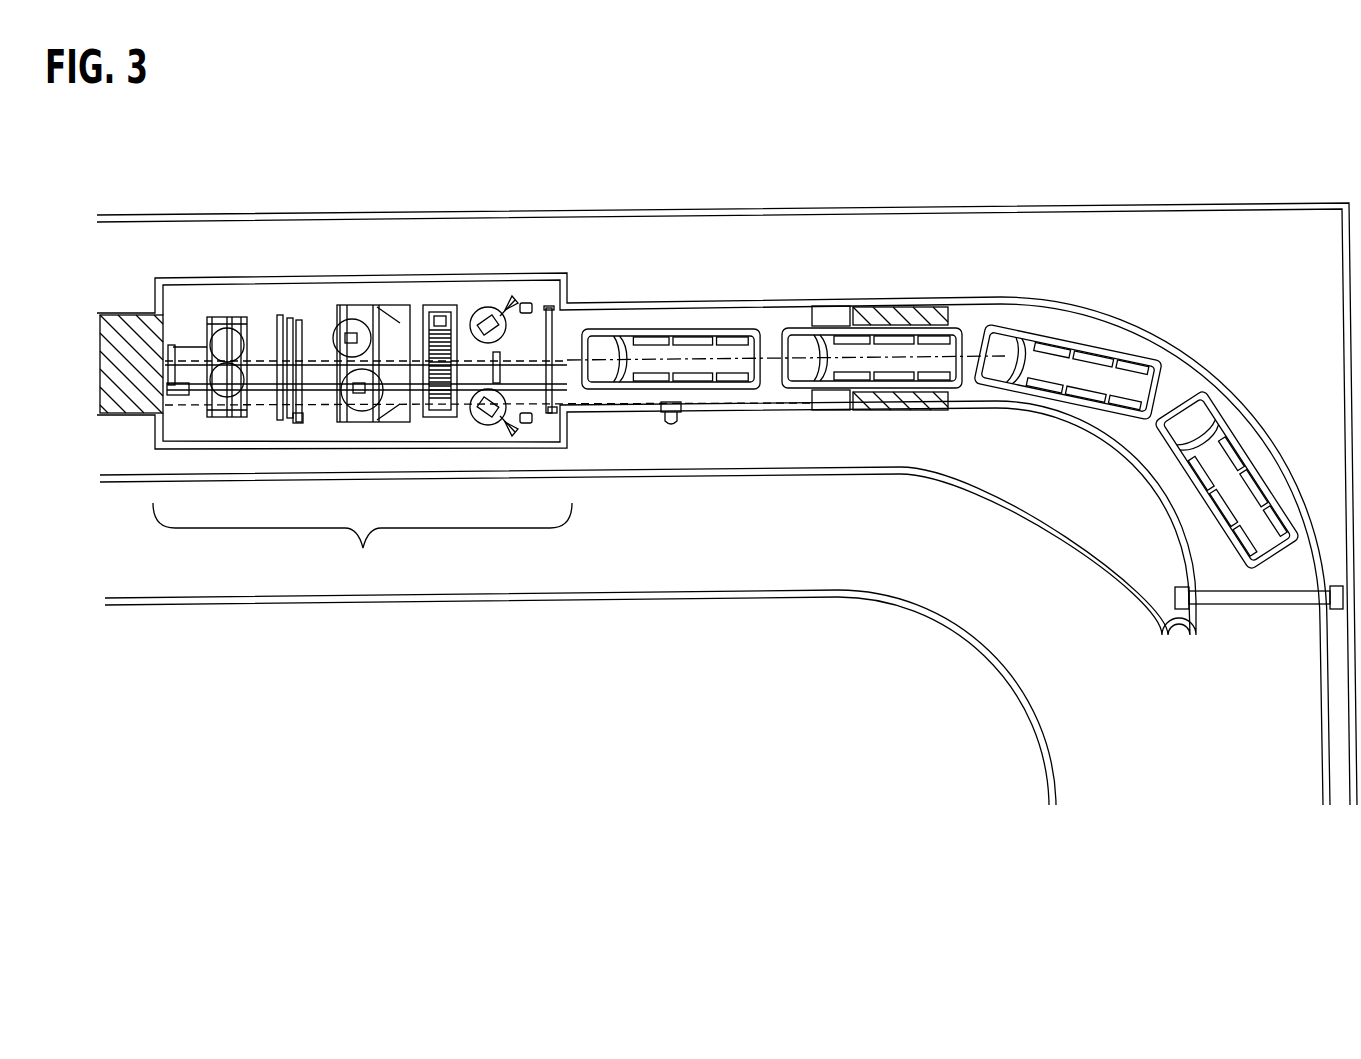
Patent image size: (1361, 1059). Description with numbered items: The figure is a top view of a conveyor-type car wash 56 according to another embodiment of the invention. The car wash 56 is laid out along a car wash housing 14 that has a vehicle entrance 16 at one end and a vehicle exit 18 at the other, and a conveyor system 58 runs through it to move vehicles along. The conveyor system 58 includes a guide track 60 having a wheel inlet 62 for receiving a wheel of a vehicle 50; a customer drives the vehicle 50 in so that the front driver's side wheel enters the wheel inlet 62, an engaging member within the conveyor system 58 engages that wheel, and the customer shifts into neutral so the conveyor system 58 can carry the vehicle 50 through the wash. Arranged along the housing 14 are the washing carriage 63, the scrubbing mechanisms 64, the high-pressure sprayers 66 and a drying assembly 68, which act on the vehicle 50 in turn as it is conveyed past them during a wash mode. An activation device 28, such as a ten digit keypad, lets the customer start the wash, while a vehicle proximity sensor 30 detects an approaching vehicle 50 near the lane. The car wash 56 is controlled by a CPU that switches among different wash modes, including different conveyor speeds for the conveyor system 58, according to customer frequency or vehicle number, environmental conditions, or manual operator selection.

The car wash housing 14 is at (362, 540).
The vehicle entrance 16 is at (568, 298).
The vehicle exit 18 is at (153, 302).
The activation device 28 is at (672, 425).
The vehicle proximity sensor 30 is at (1178, 586).
The vehicle 50 is at (1257, 480).
The car wash 56 is at (230, 637).
The conveyor system 58 is at (577, 392).
The guide track 60 is at (583, 330).
The wheel inlet 62 is at (779, 355).
The washing carriage 63 is at (400, 412).
The scrubbing mechanisms 64 is at (324, 322).
The high-pressure sprayers 66 is at (528, 304).
The drying assembly 68 is at (228, 318).